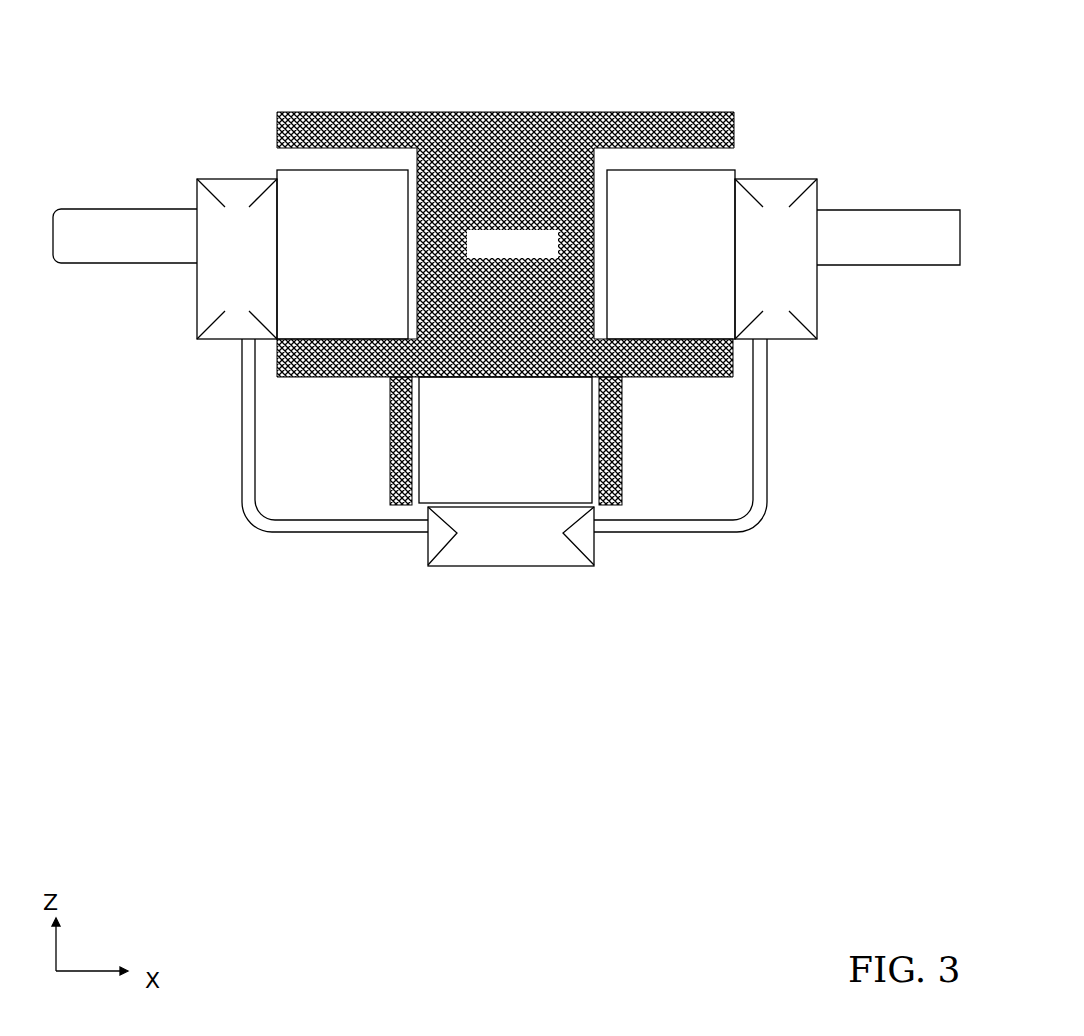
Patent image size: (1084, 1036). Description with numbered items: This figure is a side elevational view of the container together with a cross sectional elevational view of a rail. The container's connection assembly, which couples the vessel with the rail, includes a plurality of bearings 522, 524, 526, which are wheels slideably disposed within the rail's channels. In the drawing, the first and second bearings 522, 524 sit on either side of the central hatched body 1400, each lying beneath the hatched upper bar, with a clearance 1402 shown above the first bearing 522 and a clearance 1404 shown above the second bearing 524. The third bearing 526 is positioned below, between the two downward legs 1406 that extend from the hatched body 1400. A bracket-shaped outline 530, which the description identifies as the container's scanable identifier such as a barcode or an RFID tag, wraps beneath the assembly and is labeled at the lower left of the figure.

The magnetic core 1400 is at (476, 257).
The gap between core and first coil 1402 is at (330, 158).
The gap between core and second coil 1404 is at (670, 162).
The core legs 1406 is at (415, 484).
The bearing 522 is at (306, 268).
The bearing 524 is at (697, 263).
The bearing 526 is at (492, 446).
The scanable identifier 530 is at (253, 520).